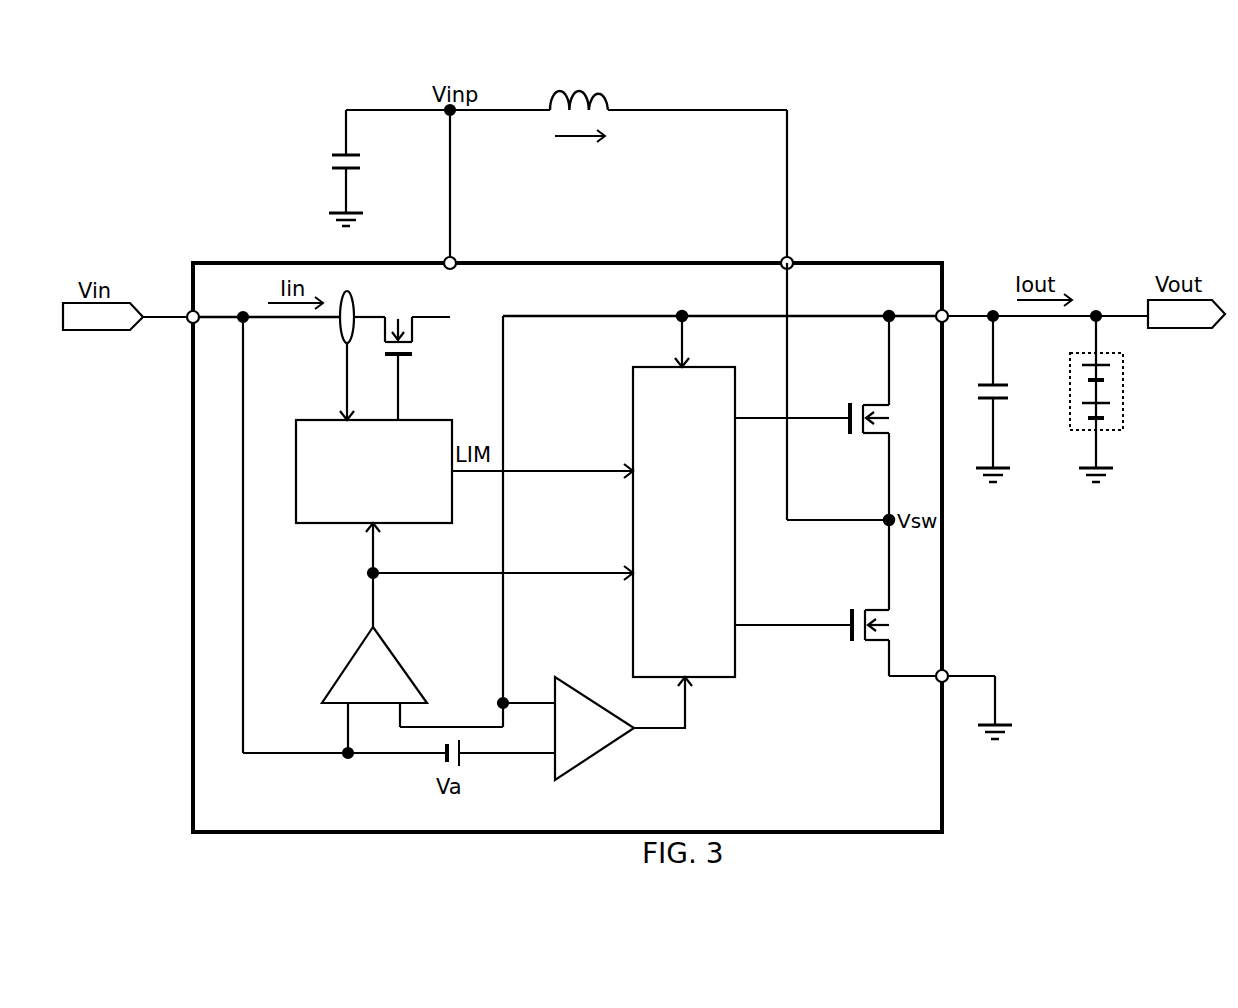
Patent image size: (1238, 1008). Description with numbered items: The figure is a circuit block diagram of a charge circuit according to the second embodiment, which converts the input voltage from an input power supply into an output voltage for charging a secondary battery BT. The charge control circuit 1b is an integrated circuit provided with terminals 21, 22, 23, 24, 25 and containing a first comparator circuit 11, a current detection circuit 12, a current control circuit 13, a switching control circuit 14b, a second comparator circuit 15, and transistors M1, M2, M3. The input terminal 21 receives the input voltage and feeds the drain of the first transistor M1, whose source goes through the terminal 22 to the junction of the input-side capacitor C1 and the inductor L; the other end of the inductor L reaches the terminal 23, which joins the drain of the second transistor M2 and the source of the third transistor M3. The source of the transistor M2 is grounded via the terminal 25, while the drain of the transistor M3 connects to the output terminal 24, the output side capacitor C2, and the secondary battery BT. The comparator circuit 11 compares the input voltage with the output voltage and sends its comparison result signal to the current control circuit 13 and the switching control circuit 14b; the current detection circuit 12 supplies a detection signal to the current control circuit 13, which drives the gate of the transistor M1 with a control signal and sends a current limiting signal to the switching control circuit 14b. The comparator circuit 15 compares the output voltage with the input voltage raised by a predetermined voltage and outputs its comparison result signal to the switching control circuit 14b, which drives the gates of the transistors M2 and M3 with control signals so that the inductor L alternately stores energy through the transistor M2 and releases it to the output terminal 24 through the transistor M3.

The charge control circuit 1b is at (865, 263).
The comparator circuit 11 is at (427, 703).
The current detection circuit 12 is at (355, 300).
The current control circuit 13 is at (296, 470).
The switching control circuit 14b is at (735, 520).
The comparator circuit 15 is at (556, 676).
The input terminal 21 is at (191, 314).
The terminal 22 is at (456, 259).
The terminal 23 is at (793, 259).
The output terminal 24 is at (948, 312).
The terminal 25 is at (948, 672).
The first transistor M1 is at (413, 330).
The second transistor M2 is at (873, 610).
The third transistor M3 is at (872, 405).
The input-side capacitor C1 is at (352, 152).
The output side capacitor C2 is at (1000, 384).
The inductor L is at (604, 106).
The secondary battery BT is at (1124, 392).